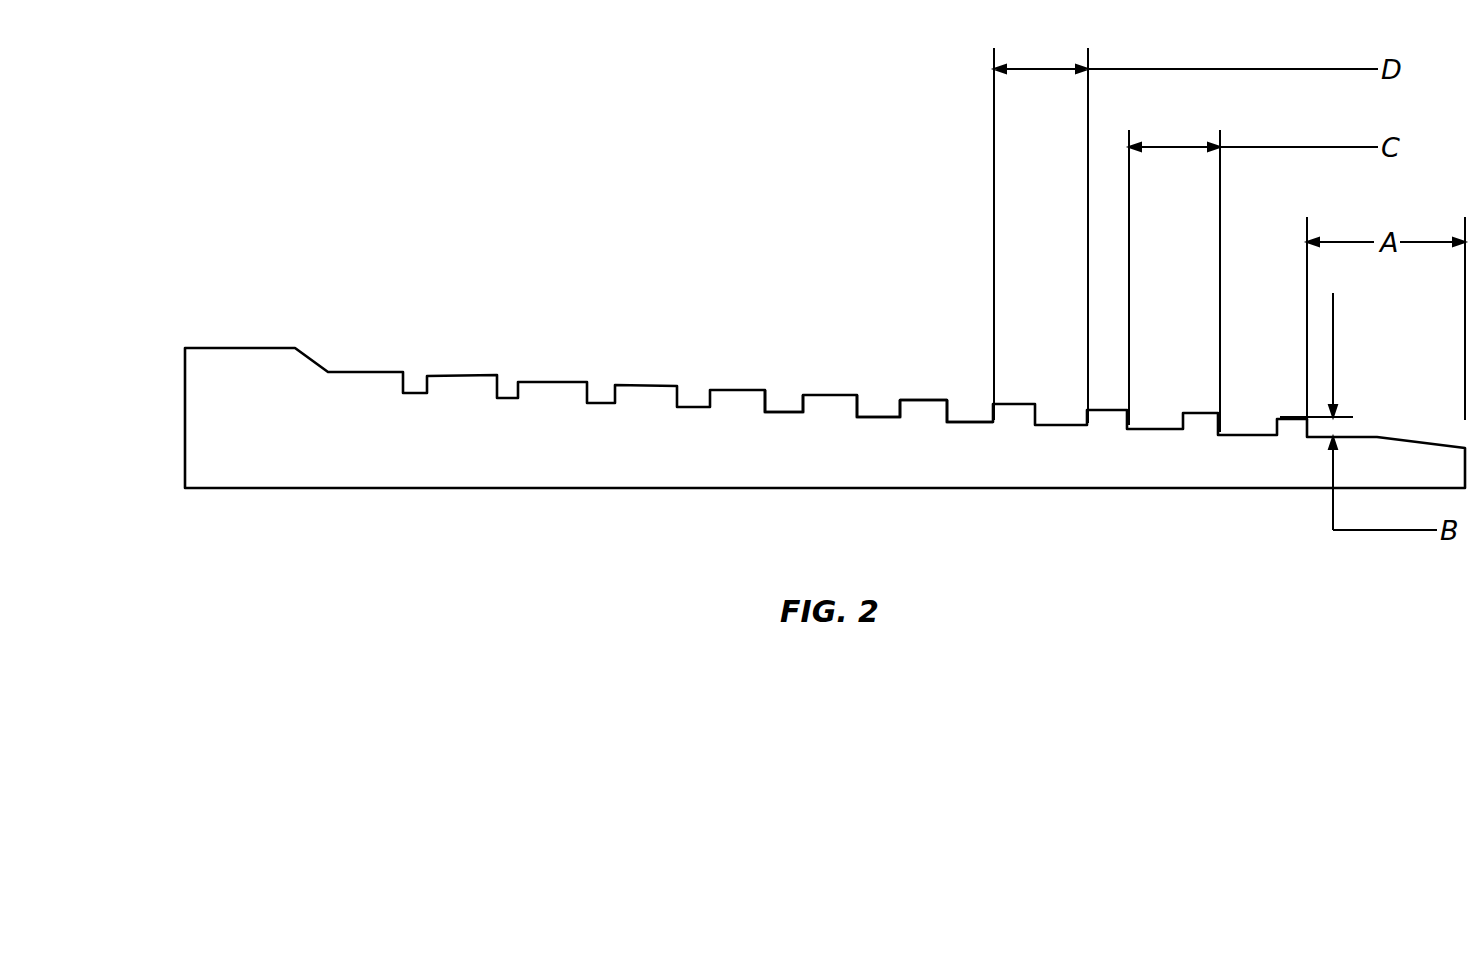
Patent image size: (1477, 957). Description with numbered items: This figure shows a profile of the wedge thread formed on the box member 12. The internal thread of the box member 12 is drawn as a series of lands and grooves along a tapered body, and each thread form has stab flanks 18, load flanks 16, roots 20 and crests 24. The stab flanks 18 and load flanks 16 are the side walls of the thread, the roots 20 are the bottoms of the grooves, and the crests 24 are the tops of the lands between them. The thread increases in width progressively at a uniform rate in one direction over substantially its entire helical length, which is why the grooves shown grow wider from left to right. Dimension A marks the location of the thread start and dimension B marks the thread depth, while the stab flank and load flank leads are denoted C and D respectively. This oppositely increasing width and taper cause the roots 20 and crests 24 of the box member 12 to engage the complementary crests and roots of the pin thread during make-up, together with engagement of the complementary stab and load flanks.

The box member 12 is at (227, 488).
The load flanks 16 is at (800, 400).
The stab flanks 18 is at (947, 413).
The roots 20 is at (878, 416).
The crests 24 is at (920, 400).